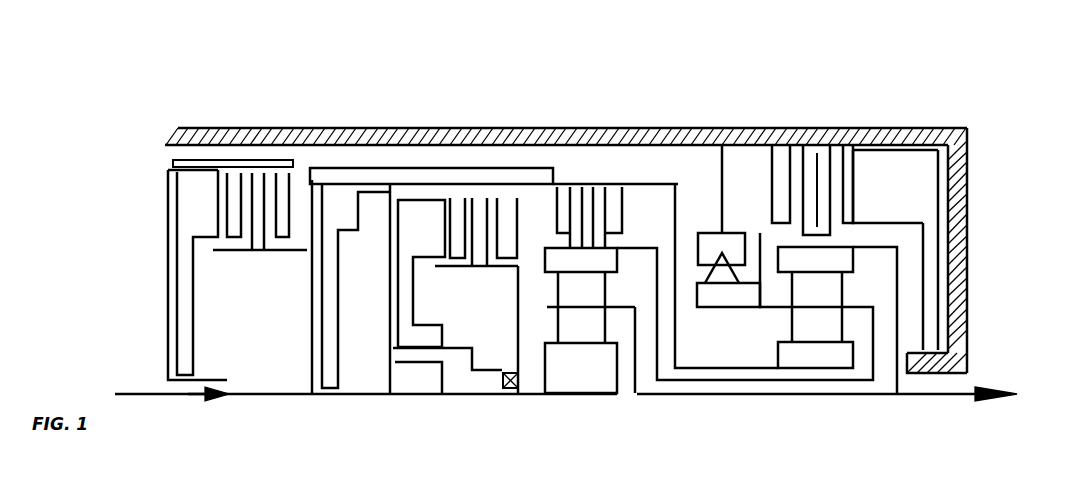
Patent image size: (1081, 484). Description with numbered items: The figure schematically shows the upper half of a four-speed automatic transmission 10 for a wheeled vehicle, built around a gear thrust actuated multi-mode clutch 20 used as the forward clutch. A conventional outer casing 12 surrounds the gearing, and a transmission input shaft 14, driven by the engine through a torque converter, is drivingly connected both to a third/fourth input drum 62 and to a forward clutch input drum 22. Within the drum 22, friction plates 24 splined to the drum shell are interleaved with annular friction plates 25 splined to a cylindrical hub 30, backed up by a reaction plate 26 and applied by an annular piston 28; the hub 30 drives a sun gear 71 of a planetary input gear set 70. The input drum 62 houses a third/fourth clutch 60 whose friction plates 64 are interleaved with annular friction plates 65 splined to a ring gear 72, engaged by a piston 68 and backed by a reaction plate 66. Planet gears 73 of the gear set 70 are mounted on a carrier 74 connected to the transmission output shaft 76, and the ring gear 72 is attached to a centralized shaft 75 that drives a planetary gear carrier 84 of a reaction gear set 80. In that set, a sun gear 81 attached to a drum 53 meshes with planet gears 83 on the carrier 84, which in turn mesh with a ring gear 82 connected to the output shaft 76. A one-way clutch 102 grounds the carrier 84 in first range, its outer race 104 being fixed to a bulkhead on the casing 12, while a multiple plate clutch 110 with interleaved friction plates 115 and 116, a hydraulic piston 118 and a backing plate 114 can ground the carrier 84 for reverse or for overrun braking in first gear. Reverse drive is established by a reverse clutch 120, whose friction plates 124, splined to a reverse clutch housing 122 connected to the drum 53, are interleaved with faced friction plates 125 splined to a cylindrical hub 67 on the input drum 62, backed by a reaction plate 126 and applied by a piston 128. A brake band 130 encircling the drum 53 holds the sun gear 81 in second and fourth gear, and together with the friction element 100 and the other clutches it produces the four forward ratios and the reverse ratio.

The four-speed automatic transmission 10 is at (997, 132).
The outer casing 12 is at (249, 135).
The transmission input shaft 14 is at (268, 395).
The multi-mode clutch 20 is at (498, 197).
The forward clutch input drum 22 is at (428, 213).
The friction plates 24 is at (485, 213).
The annular friction plates 25 is at (522, 213).
The reaction plate 26 is at (554, 213).
The annular piston 28 is at (462, 215).
The cylindrical hub 30 is at (472, 270).
The drum 53 is at (400, 167).
The third/fourth clutch 60 is at (667, 184).
The third/fourth input drum 62 is at (310, 330).
The friction plates 64 is at (595, 213).
The annular friction plates 65 is at (630, 213).
The reaction plate 66 is at (665, 178).
The cylindrical hub 67 is at (273, 252).
The piston 68 is at (330, 275).
The planetary input gear set 70 is at (704, 345).
The sun gear 71 is at (580, 382).
The ring gear 72 is at (607, 262).
The planet gears 73 is at (585, 293).
The carrier 74 is at (624, 312).
The centralized shaft 75 is at (692, 380).
The transmission output shaft 76 is at (920, 393).
The reaction gear set 80 is at (895, 315).
The sun gear 81 is at (795, 358).
The ring gear 82 is at (835, 257).
The planet gears 83 is at (832, 335).
The planetary gear carrier 84 is at (860, 305).
The friction element 100 is at (735, 128).
The one-way clutch 102 is at (730, 298).
The outer race 104 is at (703, 233).
The multiple plate clutch 110 is at (878, 118).
The backing plate 114 is at (782, 200).
The friction plates 115 is at (803, 213).
The friction plates 116 is at (842, 210).
The hydraulic piston 118 is at (910, 190).
The reverse clutch 120 is at (234, 197).
The reverse clutch housing 122 is at (167, 217).
The friction plates 124 is at (242, 232).
The faced friction plates 125 is at (258, 205).
The reaction plate 126 is at (288, 212).
The piston 128 is at (186, 258).
The brake band 130 is at (240, 162).